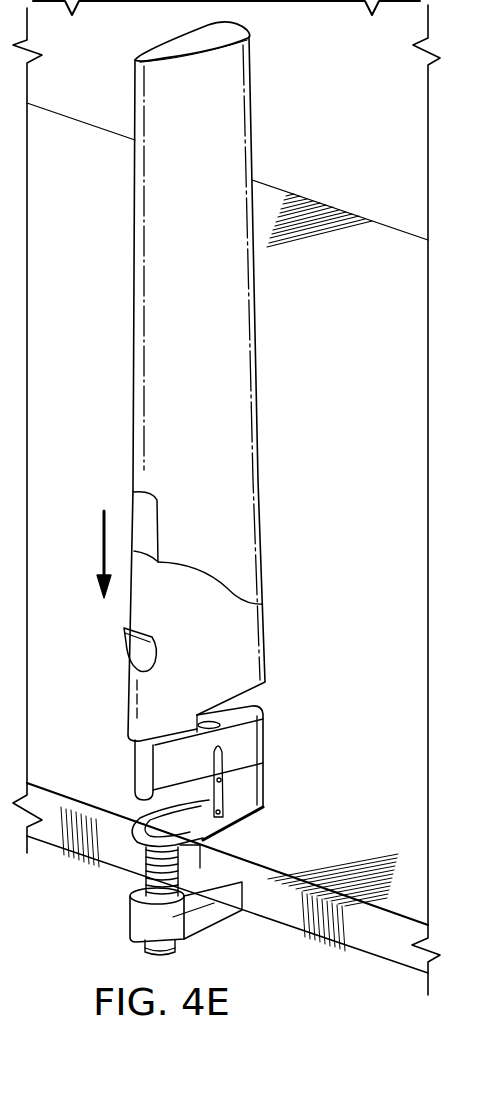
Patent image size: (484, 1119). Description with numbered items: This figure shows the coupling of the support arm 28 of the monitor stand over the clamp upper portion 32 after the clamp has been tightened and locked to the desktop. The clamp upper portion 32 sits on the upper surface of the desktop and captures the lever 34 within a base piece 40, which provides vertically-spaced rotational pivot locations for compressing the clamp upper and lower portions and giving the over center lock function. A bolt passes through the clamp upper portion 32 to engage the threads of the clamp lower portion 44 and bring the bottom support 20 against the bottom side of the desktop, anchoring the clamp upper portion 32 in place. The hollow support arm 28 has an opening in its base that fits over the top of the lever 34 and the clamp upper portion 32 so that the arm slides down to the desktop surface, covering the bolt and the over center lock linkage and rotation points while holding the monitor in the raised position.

The support arm 28 is at (258, 385).
The lever 34 is at (126, 638).
The clamp upper portion 32 is at (263, 733).
The base piece 40 is at (273, 779).
The bottom support 20 is at (182, 895).
The clamp lower portion 44 is at (129, 913).